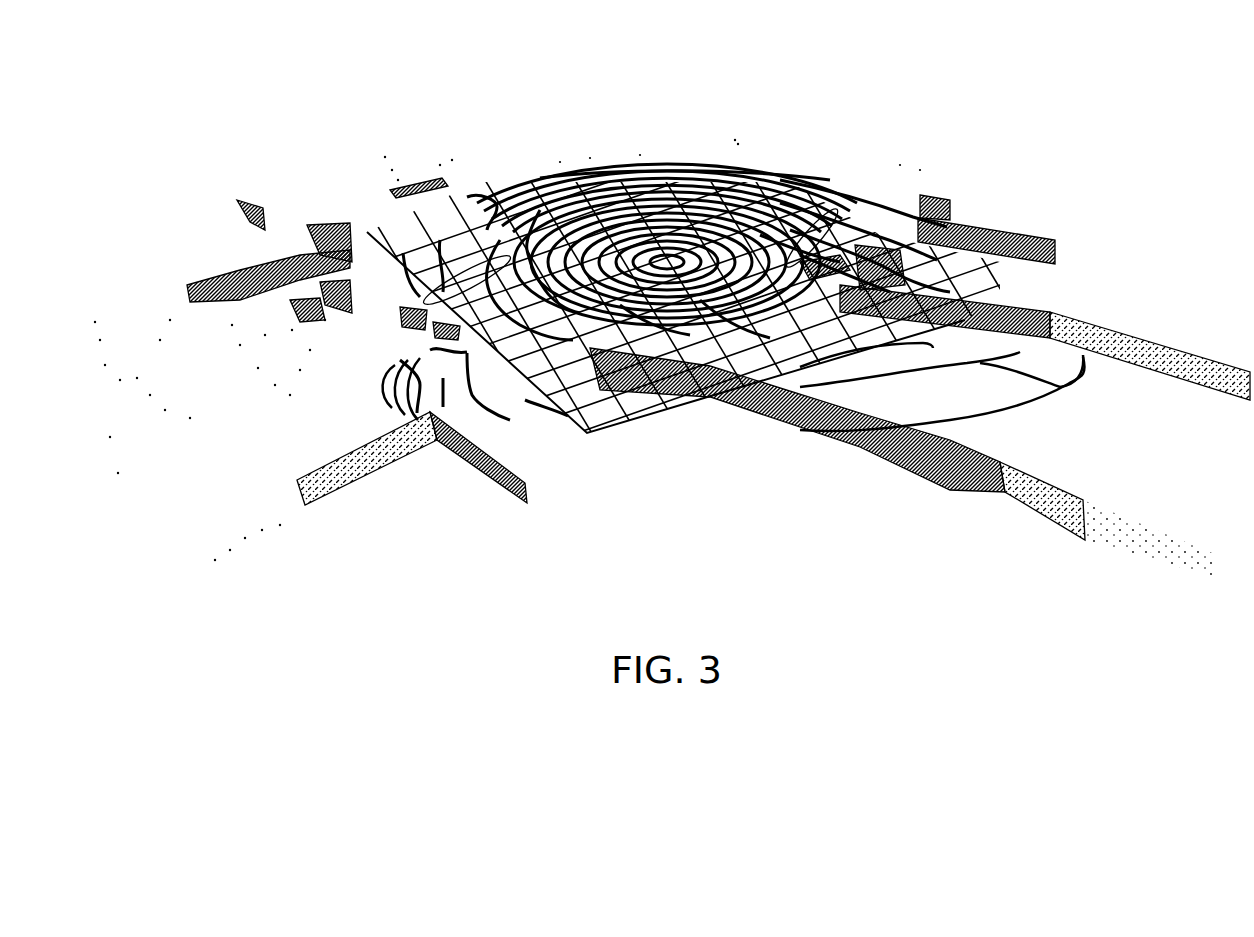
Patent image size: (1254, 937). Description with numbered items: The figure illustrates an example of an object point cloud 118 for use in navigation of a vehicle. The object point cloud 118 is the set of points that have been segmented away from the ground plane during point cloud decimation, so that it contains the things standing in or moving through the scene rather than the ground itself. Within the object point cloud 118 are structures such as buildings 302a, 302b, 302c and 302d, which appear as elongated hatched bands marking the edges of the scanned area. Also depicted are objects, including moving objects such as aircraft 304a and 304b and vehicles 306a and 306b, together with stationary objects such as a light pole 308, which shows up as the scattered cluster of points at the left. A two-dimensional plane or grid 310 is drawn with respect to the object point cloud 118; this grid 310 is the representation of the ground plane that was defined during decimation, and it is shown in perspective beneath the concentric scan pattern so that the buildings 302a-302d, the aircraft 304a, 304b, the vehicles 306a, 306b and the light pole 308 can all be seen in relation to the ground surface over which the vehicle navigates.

The object point cloud 118 is at (713, 175).
The building 302a is at (993, 220).
The building 302b is at (917, 267).
The building 302c is at (710, 389).
The building 302d is at (470, 480).
The aircraft 304a is at (418, 187).
The aircraft 304b is at (427, 307).
The vehicle 306a is at (738, 137).
The vehicle 306b is at (797, 220).
The light pole 308 is at (380, 160).
The grid 310 is at (585, 427).